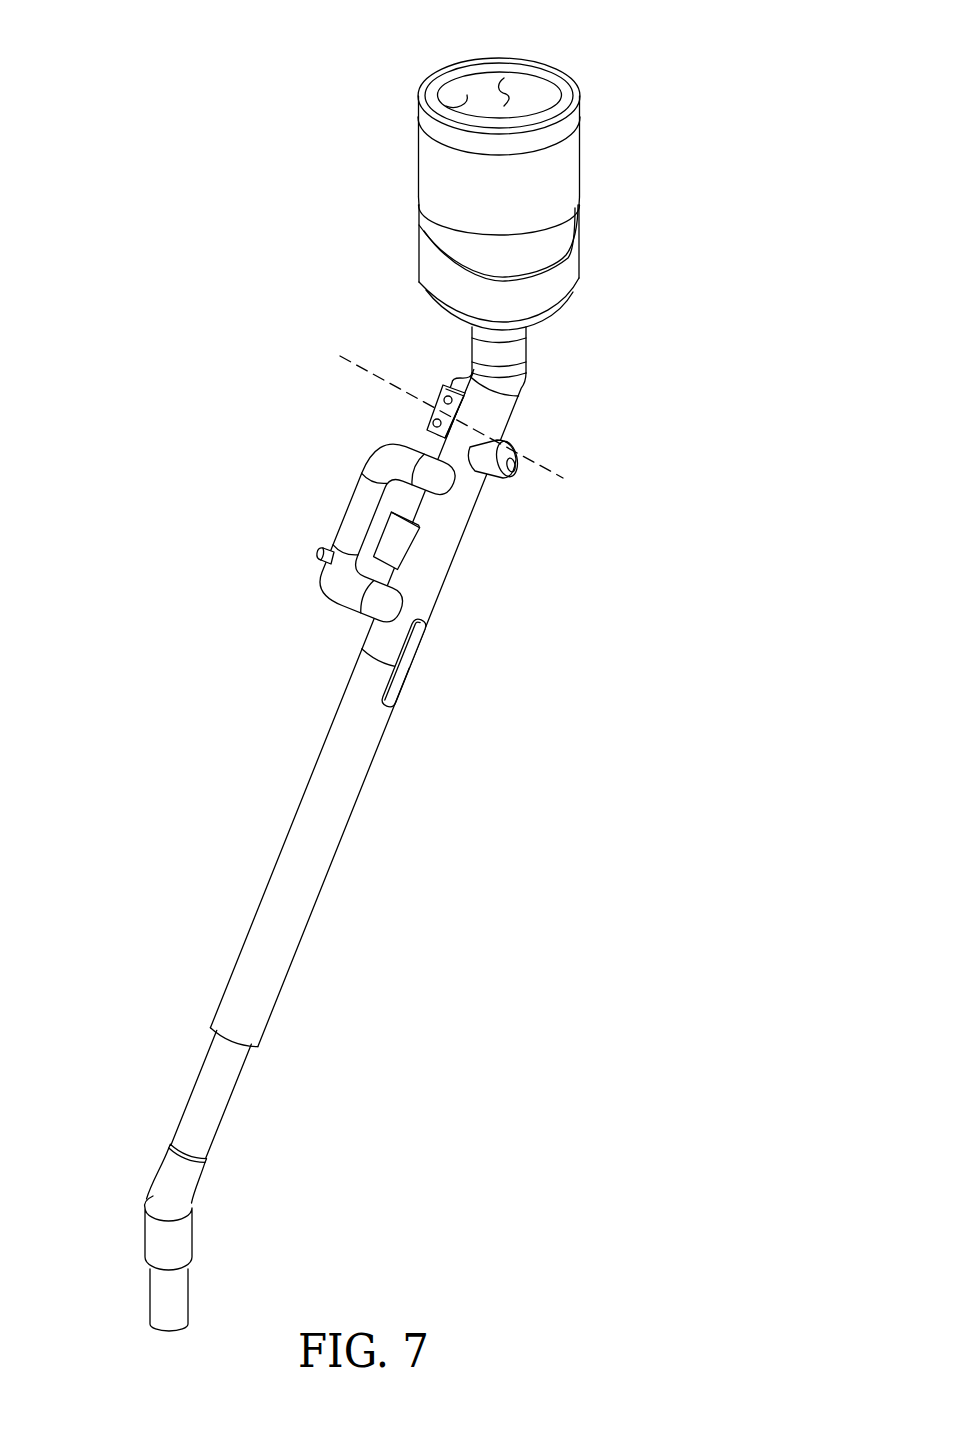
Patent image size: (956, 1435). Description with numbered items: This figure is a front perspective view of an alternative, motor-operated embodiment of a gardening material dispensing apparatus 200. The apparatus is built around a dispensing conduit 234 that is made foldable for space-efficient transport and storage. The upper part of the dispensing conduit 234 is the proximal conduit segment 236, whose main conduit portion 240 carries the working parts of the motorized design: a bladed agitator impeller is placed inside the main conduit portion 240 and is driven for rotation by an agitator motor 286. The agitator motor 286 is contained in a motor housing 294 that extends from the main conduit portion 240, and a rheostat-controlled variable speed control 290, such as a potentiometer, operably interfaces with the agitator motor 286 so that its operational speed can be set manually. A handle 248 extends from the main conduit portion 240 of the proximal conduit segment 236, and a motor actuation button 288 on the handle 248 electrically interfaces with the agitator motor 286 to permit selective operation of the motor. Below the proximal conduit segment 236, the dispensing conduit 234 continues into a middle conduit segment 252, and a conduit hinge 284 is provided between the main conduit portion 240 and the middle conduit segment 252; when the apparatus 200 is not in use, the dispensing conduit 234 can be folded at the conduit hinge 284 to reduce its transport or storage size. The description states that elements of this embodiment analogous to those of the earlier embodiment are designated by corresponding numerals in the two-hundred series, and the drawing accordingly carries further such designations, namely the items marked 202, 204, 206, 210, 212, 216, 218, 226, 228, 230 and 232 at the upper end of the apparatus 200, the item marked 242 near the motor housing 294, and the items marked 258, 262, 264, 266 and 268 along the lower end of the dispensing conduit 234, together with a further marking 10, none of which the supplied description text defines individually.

The section line 10- 10 is at (340, 356).
The gardening material dispensing apparatus 200 is at (314, 287).
The canister assembly 202 is at (603, 156).
The cap 204 is at (590, 124).
The canister body 206 is at (438, 167).
The top face feature 210 is at (467, 95).
The opening 212 is at (507, 88).
The band 216 is at (422, 213).
The lower body portion 218 is at (438, 235).
The bottom lip 226 is at (431, 303).
The cup sleeve 228 is at (565, 275).
The cup bottom 230 is at (562, 311).
The neck 232 is at (528, 338).
The dispensing conduit 234 is at (292, 746).
The proximal conduit segment 236 is at (470, 542).
The main conduit portion 240 is at (455, 510).
The mounting bracket assembly 242 is at (382, 396).
The handle 248 is at (362, 503).
The middle conduit segment 252 is at (303, 828).
The lower tube 258 is at (210, 1088).
The bend 262 is at (208, 1196).
The ring 264 is at (170, 1175).
The collar 266 is at (152, 1210).
The tip 268 is at (160, 1298).
The conduit hinge 284 is at (424, 643).
The agitator motor 286 is at (428, 416).
The motor actuation button 288 is at (325, 556).
The variable speed control 290 is at (400, 541).
The motor housing 294 is at (518, 396).